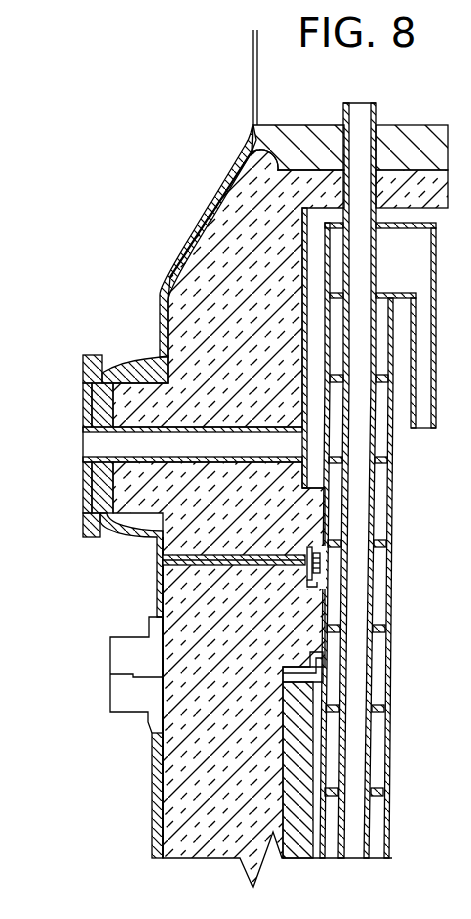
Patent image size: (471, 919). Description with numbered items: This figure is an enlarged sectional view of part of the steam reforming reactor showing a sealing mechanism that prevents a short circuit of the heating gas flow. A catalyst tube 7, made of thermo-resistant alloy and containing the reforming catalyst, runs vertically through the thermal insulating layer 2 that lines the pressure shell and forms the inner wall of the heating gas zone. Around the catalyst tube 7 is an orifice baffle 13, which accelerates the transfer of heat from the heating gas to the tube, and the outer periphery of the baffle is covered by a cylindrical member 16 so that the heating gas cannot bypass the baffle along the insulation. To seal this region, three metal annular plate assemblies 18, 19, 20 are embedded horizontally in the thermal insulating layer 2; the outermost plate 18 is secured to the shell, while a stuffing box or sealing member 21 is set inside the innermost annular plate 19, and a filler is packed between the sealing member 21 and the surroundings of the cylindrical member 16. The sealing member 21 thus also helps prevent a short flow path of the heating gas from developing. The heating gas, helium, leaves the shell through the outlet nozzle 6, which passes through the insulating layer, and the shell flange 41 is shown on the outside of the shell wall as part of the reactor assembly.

The thermal insulating layer 2 is at (210, 575).
The outlet nozzle 6 is at (82, 440).
The catalyst tube 7 is at (376, 113).
The orifice baffle 13 is at (388, 457).
The cylindrical member 16 is at (325, 670).
The outermost annular plate assembly 18 is at (193, 555).
The innermost annular plate assembly 19 is at (283, 548).
The annular plate assembly 20 is at (308, 586).
The stuffing box or sealing member 21 is at (320, 560).
The shell flange 41 is at (110, 668).